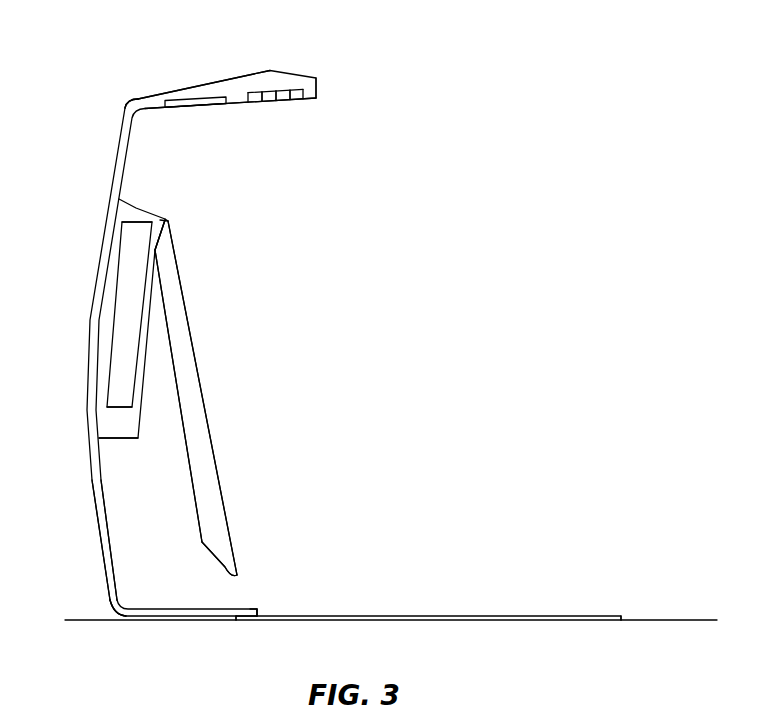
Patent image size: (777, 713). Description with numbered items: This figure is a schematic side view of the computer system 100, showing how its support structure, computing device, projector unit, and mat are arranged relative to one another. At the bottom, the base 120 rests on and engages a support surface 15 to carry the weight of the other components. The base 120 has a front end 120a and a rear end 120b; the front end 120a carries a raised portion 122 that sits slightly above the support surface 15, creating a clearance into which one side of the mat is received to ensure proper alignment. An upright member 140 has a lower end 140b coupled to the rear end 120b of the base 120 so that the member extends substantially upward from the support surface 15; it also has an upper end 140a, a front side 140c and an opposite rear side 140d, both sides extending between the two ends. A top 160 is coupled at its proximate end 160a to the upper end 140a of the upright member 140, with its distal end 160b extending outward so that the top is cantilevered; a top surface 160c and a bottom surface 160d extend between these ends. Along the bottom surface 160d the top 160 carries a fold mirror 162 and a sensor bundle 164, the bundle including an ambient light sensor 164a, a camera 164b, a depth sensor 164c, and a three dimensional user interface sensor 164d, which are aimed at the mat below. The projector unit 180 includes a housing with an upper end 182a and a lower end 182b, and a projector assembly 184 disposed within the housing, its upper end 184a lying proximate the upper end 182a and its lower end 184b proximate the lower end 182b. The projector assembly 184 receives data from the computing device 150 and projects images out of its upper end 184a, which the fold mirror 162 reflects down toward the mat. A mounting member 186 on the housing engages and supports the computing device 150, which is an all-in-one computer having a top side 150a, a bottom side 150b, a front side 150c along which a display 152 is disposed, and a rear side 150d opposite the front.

The computer system 100 is at (483, 181).
The support surface 15 is at (660, 619).
The base 120 is at (200, 610).
The front end 120a is at (266, 611).
The rear end 120b is at (118, 624).
The raised portion 122 is at (256, 606).
The upright member 140 is at (81, 414).
The upper end 140a is at (110, 108).
The lower end 140b is at (98, 608).
The front side 140c is at (103, 521).
The rear side 140d is at (94, 512).
The computing device 150 is at (210, 311).
The top side 150a is at (170, 221).
The bottom side 150b is at (237, 572).
The front side 150c is at (241, 398).
The display 152 is at (197, 370).
The lever arm inner surface 150d is at (196, 494).
The top 160 is at (191, 44).
The proximate end 160a is at (125, 92).
The distal end 160b is at (327, 80).
The top surface 160c is at (171, 87).
The bottom surface 160d is at (156, 125).
The fold mirror 162 is at (203, 106).
The sensor bundle 164 is at (280, 77).
The ambient light sensor 164a is at (321, 72).
The camera 164b is at (282, 90).
The depth sensor 164c is at (268, 90).
The three dimensional user interface sensor 164d is at (253, 90).
The projector unit 180 is at (107, 327).
The upper end 182a is at (121, 187).
The lower end 182b is at (127, 450).
The projector assembly 184 is at (114, 296).
The upper end 184a is at (117, 206).
The lower end 184b is at (136, 418).
The mounting member 186 is at (168, 246).